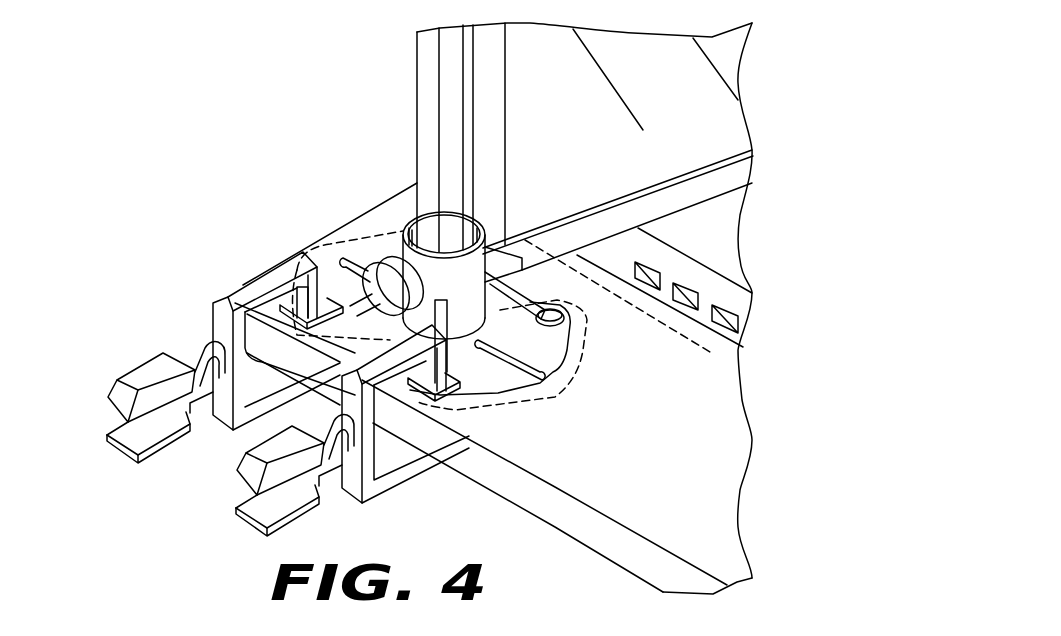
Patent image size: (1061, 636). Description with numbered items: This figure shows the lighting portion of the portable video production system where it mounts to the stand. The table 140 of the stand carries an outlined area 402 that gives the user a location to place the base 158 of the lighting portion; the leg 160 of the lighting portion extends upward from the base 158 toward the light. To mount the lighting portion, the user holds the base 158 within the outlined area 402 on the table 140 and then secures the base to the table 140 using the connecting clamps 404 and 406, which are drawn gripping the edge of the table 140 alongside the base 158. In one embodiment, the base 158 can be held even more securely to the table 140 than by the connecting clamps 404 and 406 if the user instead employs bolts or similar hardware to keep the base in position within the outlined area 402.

The table 140 is at (630, 458).
The base 158 is at (403, 227).
The leg 160 is at (427, 153).
The outlined area 402 is at (330, 237).
The connecting clamp 404 is at (107, 408).
The connecting clamp 406 is at (245, 485).